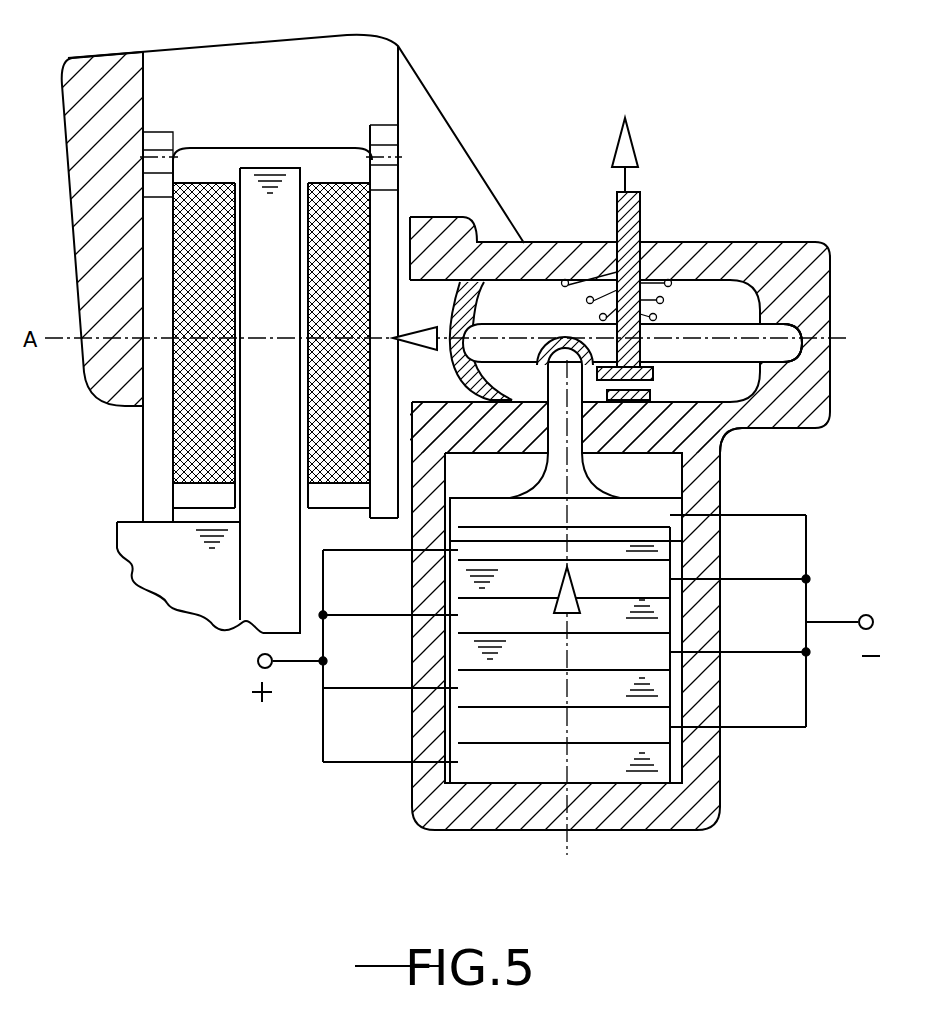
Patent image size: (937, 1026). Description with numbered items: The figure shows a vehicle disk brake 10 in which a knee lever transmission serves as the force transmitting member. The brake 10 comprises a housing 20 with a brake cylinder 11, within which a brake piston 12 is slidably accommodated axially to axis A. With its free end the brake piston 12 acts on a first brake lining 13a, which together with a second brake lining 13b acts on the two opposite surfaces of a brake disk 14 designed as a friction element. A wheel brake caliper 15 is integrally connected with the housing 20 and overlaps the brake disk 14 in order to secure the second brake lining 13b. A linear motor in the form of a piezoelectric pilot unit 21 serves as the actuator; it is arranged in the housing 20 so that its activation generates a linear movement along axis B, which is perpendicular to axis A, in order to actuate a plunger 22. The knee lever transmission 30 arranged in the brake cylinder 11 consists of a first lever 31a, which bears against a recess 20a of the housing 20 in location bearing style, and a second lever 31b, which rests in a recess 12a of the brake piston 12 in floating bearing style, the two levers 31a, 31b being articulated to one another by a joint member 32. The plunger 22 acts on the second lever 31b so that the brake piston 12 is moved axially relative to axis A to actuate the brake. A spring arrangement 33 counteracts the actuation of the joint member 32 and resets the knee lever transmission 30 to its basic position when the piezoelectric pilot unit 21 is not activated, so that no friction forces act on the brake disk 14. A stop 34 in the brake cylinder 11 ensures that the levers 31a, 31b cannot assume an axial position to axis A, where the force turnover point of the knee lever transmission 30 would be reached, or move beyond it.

The brake 10 is at (699, 87).
The brake cylinder 11 is at (590, 245).
The brake piston 12 is at (480, 150).
The valve seat 12a is at (498, 320).
The first brake lining 13a is at (335, 190).
The second brake lining 13b is at (203, 195).
The brake disk 14 is at (258, 195).
The wheel brake caliper 15 is at (108, 70).
The housing 20 is at (812, 272).
The recess of the housing 20a is at (773, 325).
The piezoelectric pilot unit 21 is at (480, 727).
The plunger 22 is at (575, 380).
The knee lever transmission 30 is at (797, 447).
The first lever 31a is at (748, 327).
The second lever 31b is at (521, 343).
The joint member 32 is at (720, 400).
The spring arrangement 33 is at (741, 277).
The stop 34 is at (643, 313).